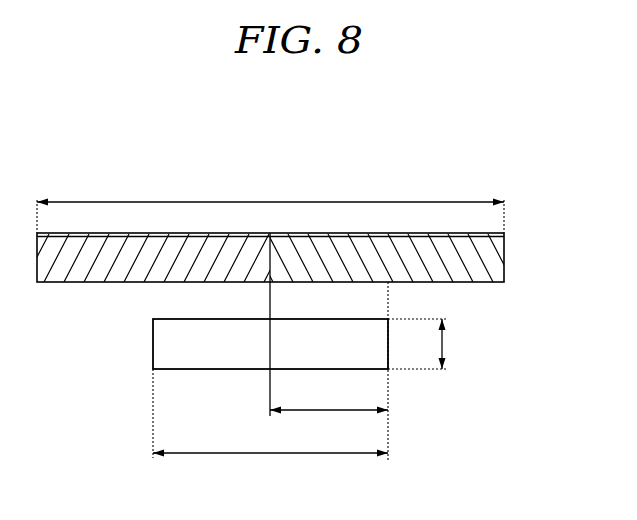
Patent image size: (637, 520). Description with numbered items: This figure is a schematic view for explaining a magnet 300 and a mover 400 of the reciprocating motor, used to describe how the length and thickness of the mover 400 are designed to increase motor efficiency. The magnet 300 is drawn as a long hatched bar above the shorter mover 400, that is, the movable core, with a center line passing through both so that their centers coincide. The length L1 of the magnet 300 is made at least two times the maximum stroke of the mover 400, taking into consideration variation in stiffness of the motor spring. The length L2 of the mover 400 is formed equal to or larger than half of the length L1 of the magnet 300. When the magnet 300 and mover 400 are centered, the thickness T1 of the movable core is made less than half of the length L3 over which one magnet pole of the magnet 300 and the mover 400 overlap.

The magnet 300 is at (504, 253).
The mover 400 is at (162, 343).
The length of the magnet L1 is at (270, 202).
The length of the mover L2 is at (270, 381).
The overlap length of one magnet pole and the mover L3 is at (329, 422).
The thickness of the movable core T1 is at (429, 344).